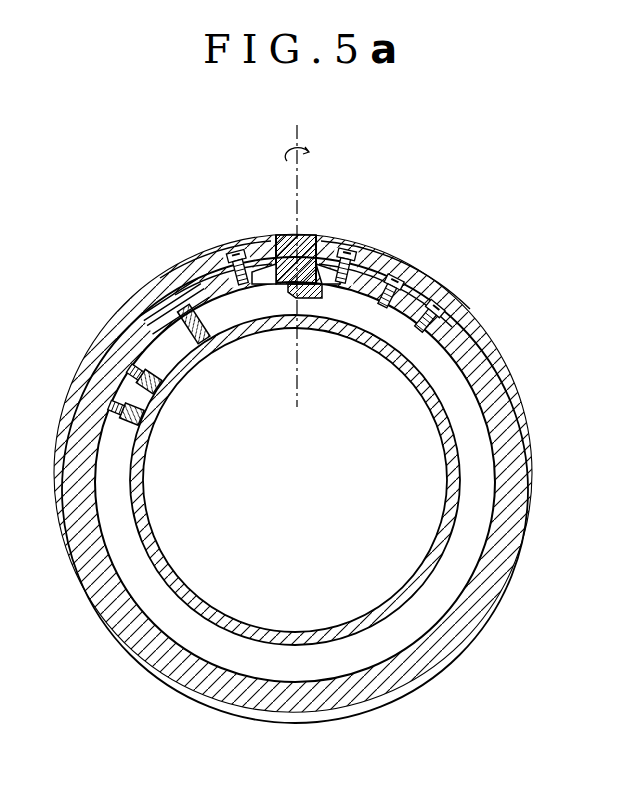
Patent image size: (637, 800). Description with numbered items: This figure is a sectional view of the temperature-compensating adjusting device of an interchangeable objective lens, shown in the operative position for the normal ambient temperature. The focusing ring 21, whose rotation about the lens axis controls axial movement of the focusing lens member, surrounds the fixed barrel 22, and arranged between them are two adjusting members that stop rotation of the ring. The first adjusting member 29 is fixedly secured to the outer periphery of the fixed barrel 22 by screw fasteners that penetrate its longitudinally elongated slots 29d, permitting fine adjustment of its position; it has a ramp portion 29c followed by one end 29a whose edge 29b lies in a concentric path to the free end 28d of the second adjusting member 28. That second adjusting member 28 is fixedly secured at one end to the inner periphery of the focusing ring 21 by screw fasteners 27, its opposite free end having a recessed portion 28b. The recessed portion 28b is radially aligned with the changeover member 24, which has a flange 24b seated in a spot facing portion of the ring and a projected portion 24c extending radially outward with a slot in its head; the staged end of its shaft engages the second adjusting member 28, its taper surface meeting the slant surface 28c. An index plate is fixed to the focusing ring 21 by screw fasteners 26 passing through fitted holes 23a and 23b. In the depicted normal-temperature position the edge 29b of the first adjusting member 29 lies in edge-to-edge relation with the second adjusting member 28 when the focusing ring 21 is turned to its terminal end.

The focusing ring 21 is at (533, 478).
The fixed barrel 22 is at (140, 475).
The fitted hole 23a is at (250, 242).
The fitted hole 23b is at (340, 245).
The changeover member 24 is at (305, 236).
The flange 24b is at (276, 240).
The projected portion 24c is at (325, 243).
The screw fasteners 26 is at (232, 258).
The screw fasteners 27 is at (453, 302).
The second adjusting member 28 is at (437, 340).
The recessed portion 28b is at (313, 300).
The slant surface 28c is at (297, 300).
The free end 28d is at (233, 300).
The first adjusting member 29 is at (133, 423).
The one end 29a is at (198, 290).
The edge 29b is at (212, 290).
The ramp portion 29c is at (180, 290).
The longitudinally elongated slots 29d is at (168, 397).